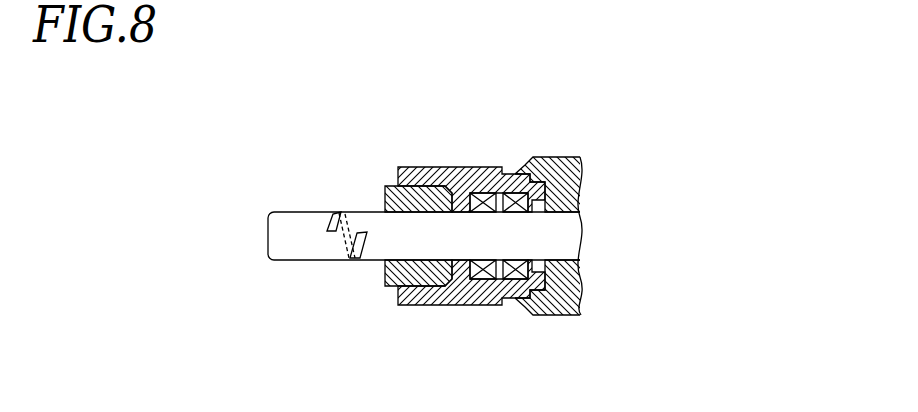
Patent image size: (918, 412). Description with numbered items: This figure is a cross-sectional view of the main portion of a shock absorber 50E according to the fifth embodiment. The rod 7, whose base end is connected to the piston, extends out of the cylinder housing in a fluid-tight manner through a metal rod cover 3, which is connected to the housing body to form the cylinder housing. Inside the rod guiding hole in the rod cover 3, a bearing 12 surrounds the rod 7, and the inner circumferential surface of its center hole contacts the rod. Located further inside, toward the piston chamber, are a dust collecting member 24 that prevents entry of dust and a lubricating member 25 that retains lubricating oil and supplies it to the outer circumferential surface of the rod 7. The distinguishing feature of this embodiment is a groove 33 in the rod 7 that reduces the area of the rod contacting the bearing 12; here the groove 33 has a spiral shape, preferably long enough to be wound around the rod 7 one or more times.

The rod cover 3 is at (466, 191).
The rod 7 is at (301, 251).
The bearing 12 is at (427, 200).
The dust collecting member 24 is at (484, 277).
The lubricating member 25 is at (512, 279).
The groove 33 is at (326, 226).
The shock absorber 50E is at (557, 70).